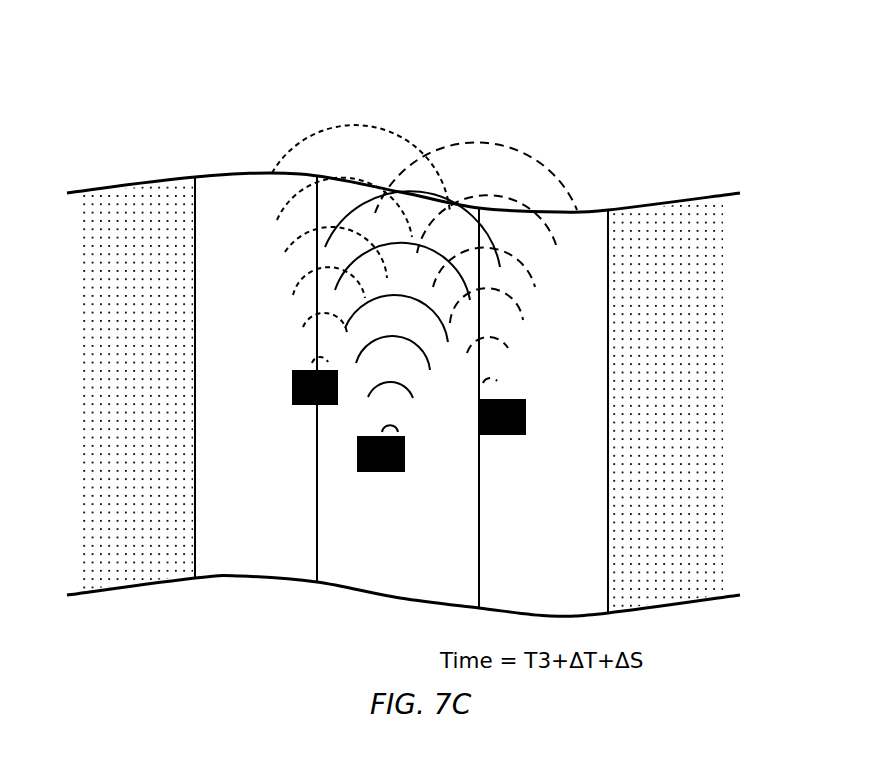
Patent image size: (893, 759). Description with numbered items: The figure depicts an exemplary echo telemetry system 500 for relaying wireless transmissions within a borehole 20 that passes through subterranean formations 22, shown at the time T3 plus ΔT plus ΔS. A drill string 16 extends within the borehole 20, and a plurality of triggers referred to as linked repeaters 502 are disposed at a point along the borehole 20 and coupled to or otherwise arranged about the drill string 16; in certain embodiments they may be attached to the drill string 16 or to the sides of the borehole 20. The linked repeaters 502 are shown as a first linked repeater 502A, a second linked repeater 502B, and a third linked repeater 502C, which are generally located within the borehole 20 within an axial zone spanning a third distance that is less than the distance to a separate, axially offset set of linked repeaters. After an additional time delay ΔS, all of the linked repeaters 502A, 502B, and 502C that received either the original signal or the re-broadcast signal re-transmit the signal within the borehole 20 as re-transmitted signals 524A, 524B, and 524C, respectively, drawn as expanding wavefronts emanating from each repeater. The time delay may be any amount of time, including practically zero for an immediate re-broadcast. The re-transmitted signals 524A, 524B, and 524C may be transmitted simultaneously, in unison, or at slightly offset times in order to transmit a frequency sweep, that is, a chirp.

The echo telemetry system 500 is at (175, 56).
The linked repeaters 502 is at (151, 372).
The first linked repeater 502A is at (292, 387).
The second linked repeater 502B is at (357, 468).
The third linked repeater 502C is at (526, 424).
The drill string 16 is at (322, 275).
The borehole 20 is at (193, 323).
The subterranean formations 22 is at (135, 489).
The re-transmitted signal 524A is at (313, 138).
The re-transmitted signal 524B is at (425, 193).
The re-transmitted signal 524C is at (537, 163).